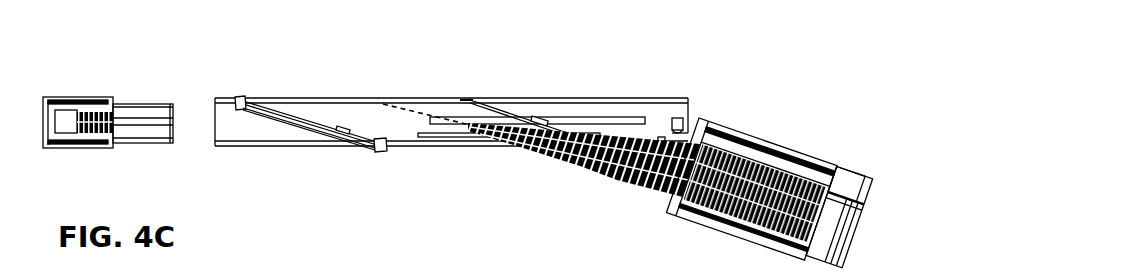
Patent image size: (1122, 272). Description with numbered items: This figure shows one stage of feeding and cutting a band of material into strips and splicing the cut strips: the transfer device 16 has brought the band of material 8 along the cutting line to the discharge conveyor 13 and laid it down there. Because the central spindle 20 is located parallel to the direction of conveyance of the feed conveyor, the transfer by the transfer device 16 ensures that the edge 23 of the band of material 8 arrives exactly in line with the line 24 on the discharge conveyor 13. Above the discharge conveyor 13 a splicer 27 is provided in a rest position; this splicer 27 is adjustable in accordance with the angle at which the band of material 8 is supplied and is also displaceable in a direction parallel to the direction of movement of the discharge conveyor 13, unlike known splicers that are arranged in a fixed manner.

The discharge conveyor 13 is at (305, 114).
The splicer 27 is at (306, 130).
The line 24 is at (371, 97).
The transfer device 16 is at (588, 123).
The central spindle 20 is at (578, 162).
The edge 23 is at (586, 167).
The band of material 8 is at (617, 180).